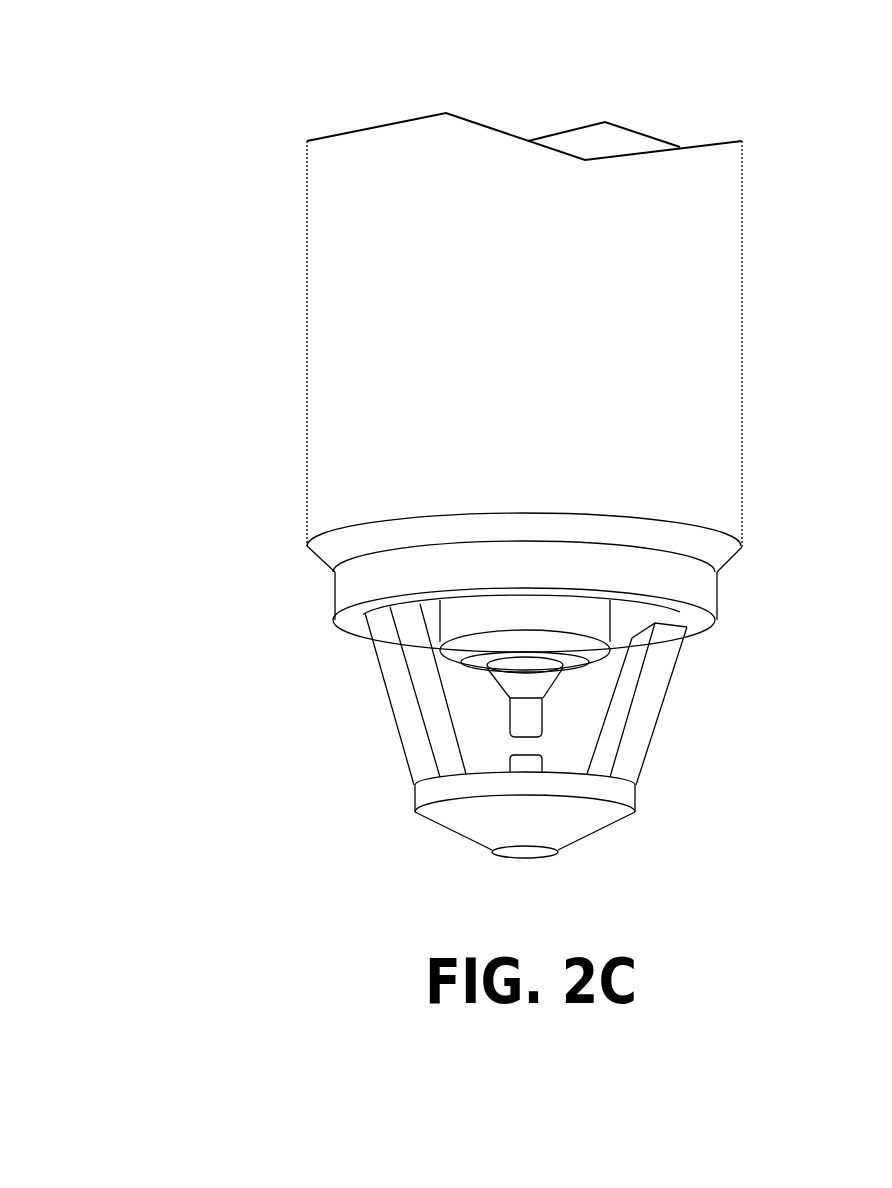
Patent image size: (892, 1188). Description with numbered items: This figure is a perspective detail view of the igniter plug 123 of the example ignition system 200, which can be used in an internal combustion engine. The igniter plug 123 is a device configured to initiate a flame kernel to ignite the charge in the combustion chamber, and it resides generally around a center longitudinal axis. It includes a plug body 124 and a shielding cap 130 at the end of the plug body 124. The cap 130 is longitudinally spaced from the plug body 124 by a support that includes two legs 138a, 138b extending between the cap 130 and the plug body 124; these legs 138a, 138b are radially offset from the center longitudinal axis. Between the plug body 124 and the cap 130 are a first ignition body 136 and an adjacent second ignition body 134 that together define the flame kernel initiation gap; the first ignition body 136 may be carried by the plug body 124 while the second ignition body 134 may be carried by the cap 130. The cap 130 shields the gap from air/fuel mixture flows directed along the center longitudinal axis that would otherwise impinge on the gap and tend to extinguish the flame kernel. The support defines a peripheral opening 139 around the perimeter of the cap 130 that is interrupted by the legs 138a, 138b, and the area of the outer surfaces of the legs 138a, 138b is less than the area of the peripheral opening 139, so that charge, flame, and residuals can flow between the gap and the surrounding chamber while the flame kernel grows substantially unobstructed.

The ignition system 200 is at (162, 47).
The igniter plug 123 is at (234, 208).
The plug body 124 is at (362, 415).
The cap 130 is at (447, 815).
The second ignition body 134 is at (510, 762).
The first ignition body 136 is at (530, 723).
The leg 138a is at (400, 707).
The leg 138b is at (660, 693).
The peripheral opening 139 is at (587, 703).